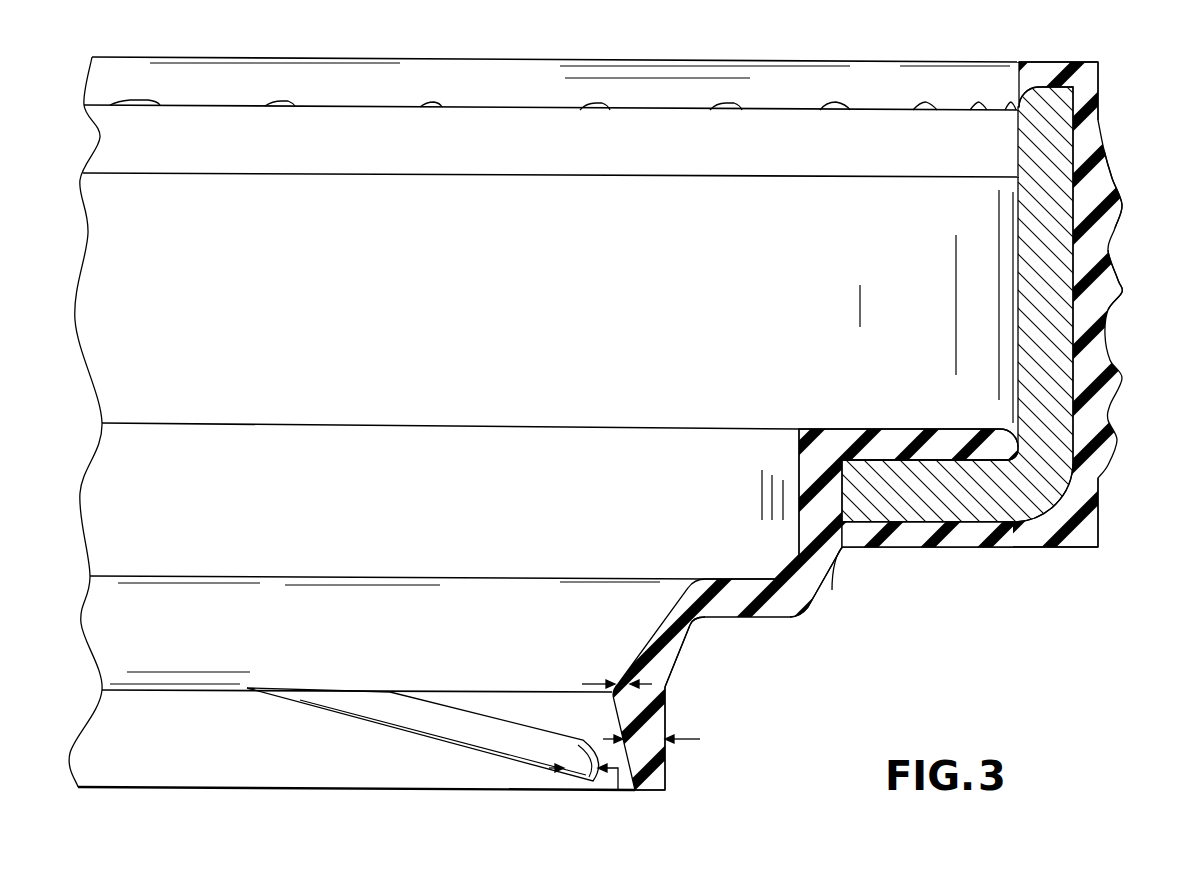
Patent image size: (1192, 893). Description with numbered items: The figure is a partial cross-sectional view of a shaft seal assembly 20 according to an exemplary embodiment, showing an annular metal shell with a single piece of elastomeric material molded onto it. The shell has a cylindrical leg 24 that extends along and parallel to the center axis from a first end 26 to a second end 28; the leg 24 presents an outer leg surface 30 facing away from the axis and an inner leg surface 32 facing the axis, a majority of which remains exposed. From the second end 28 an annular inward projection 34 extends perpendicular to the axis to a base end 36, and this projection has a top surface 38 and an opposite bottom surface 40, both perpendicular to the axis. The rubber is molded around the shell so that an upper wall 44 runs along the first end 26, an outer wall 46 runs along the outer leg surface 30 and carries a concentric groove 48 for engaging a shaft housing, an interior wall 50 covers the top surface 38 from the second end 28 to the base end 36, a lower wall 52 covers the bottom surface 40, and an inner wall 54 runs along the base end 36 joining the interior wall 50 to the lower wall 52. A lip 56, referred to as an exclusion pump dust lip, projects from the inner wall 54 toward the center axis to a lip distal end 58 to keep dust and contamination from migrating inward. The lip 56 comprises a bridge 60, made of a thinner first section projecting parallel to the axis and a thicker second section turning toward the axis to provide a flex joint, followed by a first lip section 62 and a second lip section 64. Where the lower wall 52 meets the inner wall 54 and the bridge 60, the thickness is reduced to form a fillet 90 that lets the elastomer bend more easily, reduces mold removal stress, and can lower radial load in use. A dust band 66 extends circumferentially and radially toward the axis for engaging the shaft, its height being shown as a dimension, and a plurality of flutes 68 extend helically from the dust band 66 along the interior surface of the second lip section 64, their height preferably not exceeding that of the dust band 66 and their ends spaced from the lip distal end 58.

The shaft seal assembly 20 is at (1140, 60).
The leg 24 is at (1083, 257).
The first end 26 is at (1035, 86).
The second end 28 is at (1098, 493).
The outer leg surface 30 is at (1074, 308).
The inner leg surface 32 is at (1018, 190).
The inward projection 34 is at (988, 534).
The base end 36 is at (797, 546).
The top surface 38 is at (948, 460).
The bottom surface 40 is at (918, 525).
The upper wall 44 is at (1077, 62).
The outer wall 46 is at (1098, 120).
The concentric groove 48 is at (1108, 228).
The interior wall 50 is at (830, 429).
The lower wall 52 is at (1070, 548).
The inner wall 54 is at (799, 465).
The lip 56 is at (822, 622).
The lip distal end 58 is at (648, 791).
The bridge 60 is at (812, 579).
The first lip section 62 is at (672, 645).
The second lip section 64 is at (665, 768).
The dust band 66 is at (543, 690).
The flutes 68 is at (503, 742).
The fillet 90 is at (843, 548).